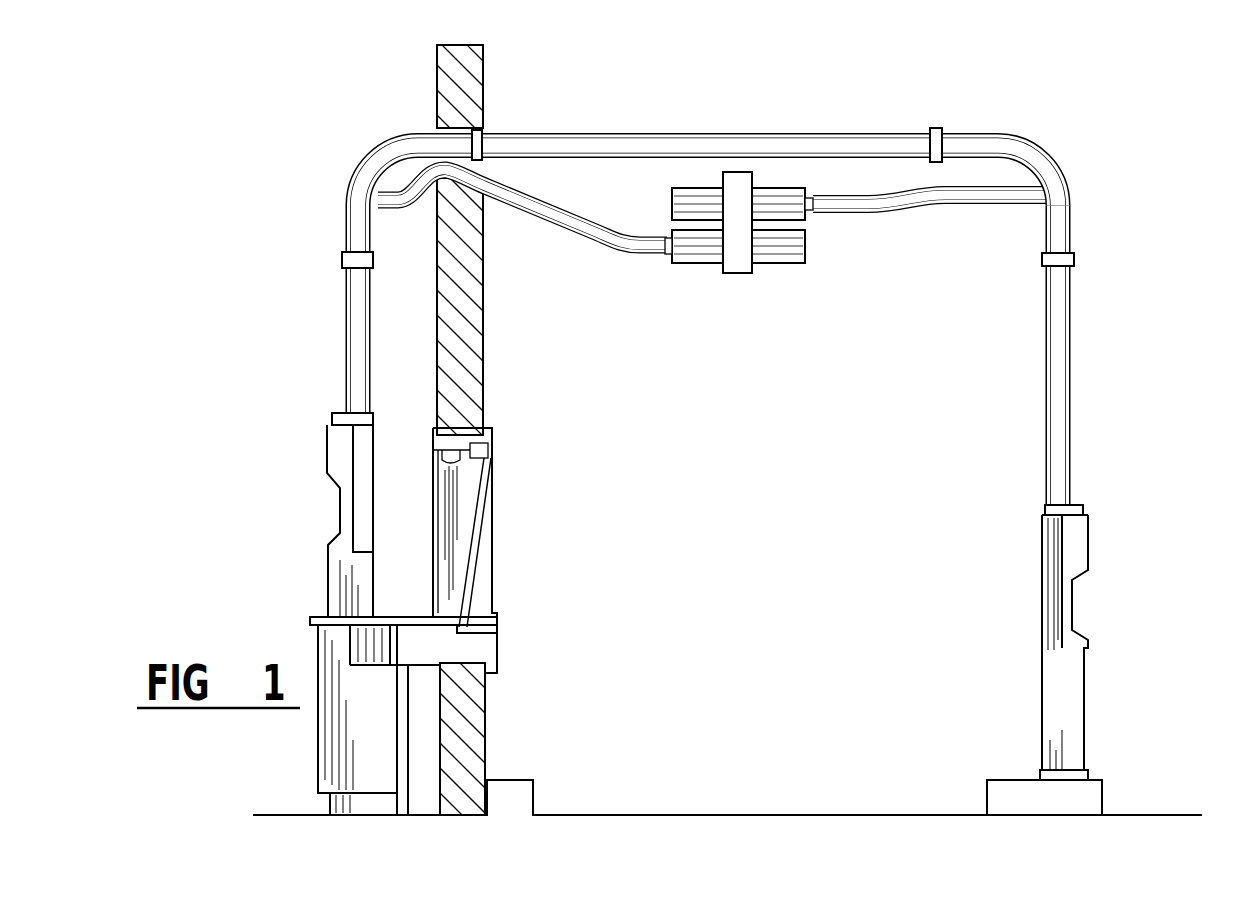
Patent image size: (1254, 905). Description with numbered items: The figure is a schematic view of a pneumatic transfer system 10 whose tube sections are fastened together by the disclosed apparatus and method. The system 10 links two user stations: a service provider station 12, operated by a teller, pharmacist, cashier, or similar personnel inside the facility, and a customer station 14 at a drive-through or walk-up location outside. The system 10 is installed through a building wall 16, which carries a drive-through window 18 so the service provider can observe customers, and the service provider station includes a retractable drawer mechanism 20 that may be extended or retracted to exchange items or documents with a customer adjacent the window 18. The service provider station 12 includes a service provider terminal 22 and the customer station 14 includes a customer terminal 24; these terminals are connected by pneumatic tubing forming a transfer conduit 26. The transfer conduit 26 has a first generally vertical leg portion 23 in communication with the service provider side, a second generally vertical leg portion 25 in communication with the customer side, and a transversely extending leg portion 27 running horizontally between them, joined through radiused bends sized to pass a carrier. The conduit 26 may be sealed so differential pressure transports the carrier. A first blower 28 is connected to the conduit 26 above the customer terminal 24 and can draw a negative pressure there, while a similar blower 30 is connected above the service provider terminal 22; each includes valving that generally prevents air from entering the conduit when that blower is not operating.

The pneumatic transfer system 10 is at (1022, 131).
The service provider station 12 is at (270, 612).
The customer station 14 is at (1150, 607).
The building wall 16 is at (483, 333).
The drive-through window 18 is at (483, 515).
The retractable drawer mechanism 20 is at (497, 648).
The service provider terminal 22 is at (328, 447).
The first generally vertically extending leg portion 23 is at (345, 322).
The customer terminal 24 is at (1085, 687).
The second generally vertically extending leg portion 25 is at (1071, 354).
The transfer conduit 26 is at (640, 110).
The transversely extending leg portion 27 is at (808, 132).
The first blower 28 is at (772, 195).
The blower 30 is at (783, 264).